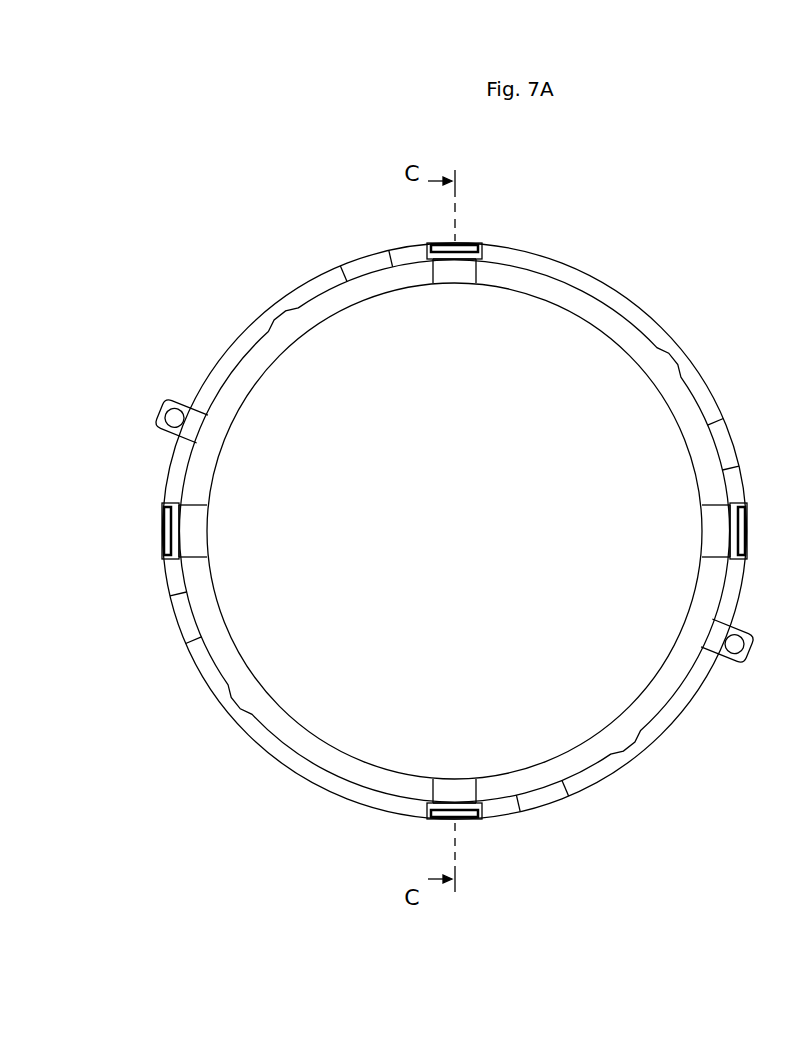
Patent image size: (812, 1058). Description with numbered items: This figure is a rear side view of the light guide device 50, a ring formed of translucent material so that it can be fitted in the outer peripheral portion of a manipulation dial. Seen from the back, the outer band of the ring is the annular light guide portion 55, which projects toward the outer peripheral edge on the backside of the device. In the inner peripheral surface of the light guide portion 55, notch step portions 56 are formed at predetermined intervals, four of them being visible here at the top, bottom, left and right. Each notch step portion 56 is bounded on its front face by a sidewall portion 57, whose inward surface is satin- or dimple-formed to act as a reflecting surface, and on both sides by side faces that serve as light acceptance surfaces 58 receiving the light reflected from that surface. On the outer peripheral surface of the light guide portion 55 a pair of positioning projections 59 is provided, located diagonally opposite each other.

The light guide device 50 is at (642, 340).
The light guide portion 55 is at (560, 270).
The notch step portion 56 is at (456, 256).
The sidewall portion 57 is at (458, 248).
The light acceptance surface 58 is at (433, 283).
The positioning projection 59 is at (173, 408).